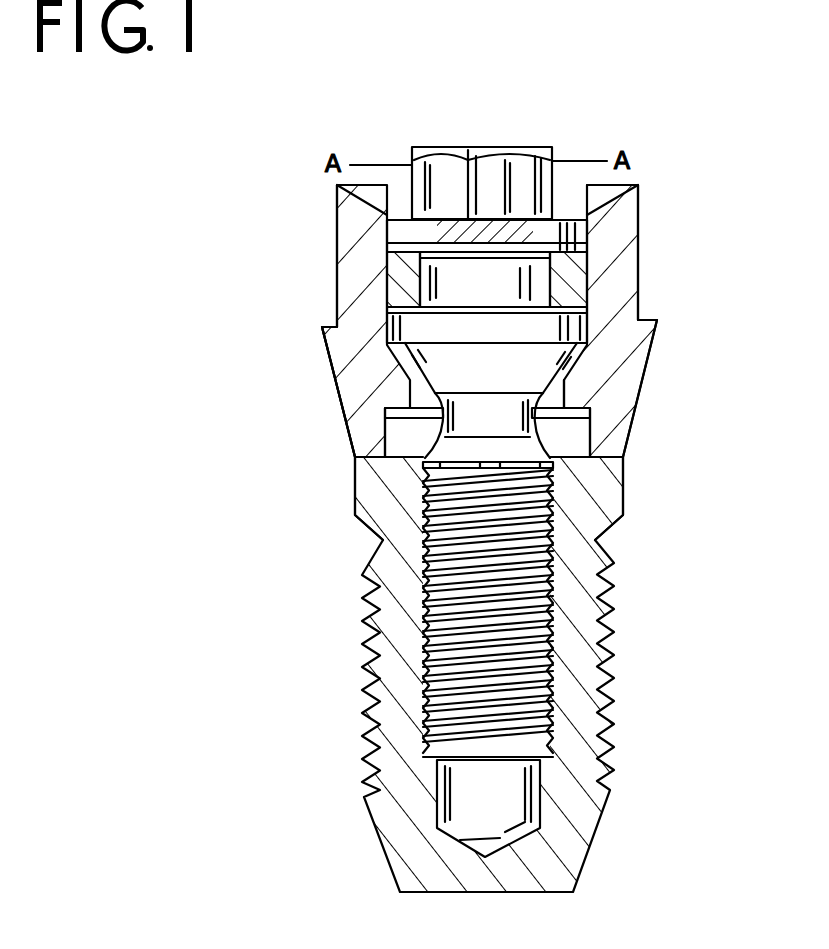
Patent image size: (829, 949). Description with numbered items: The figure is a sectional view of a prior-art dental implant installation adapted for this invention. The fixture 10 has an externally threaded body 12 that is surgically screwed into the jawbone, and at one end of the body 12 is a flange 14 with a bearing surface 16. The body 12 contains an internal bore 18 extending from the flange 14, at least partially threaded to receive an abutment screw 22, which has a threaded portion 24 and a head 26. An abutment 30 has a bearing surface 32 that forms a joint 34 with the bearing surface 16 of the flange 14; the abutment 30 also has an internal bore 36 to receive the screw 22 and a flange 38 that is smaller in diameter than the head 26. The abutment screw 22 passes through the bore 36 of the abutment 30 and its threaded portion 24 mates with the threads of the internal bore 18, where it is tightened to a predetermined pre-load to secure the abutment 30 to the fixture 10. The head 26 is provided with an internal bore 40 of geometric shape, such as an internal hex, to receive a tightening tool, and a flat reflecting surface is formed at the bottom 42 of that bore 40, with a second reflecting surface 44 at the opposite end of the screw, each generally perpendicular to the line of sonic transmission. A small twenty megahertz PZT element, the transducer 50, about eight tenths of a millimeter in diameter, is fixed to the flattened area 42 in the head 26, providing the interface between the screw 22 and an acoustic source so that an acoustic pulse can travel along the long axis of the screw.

The fixture 10 is at (632, 608).
The externally threaded body 12 is at (615, 703).
The flange 14 is at (623, 468).
The bearing surface 16 is at (603, 438).
The internal bore 18 is at (565, 578).
The abutment screw 22 is at (587, 323).
The threaded portion 24 is at (548, 657).
The head 26 is at (553, 152).
The abutment 30 is at (630, 250).
The bearing surface 32 is at (355, 484).
The joint 34 is at (352, 455).
The internal bore 36 is at (565, 375).
The flange 38 is at (390, 338).
The internal bore 40 is at (433, 187).
The bottom of bore 42 is at (437, 235).
The second reflecting surface 44 is at (497, 755).
The PZT element (transducer) 50 is at (527, 232).